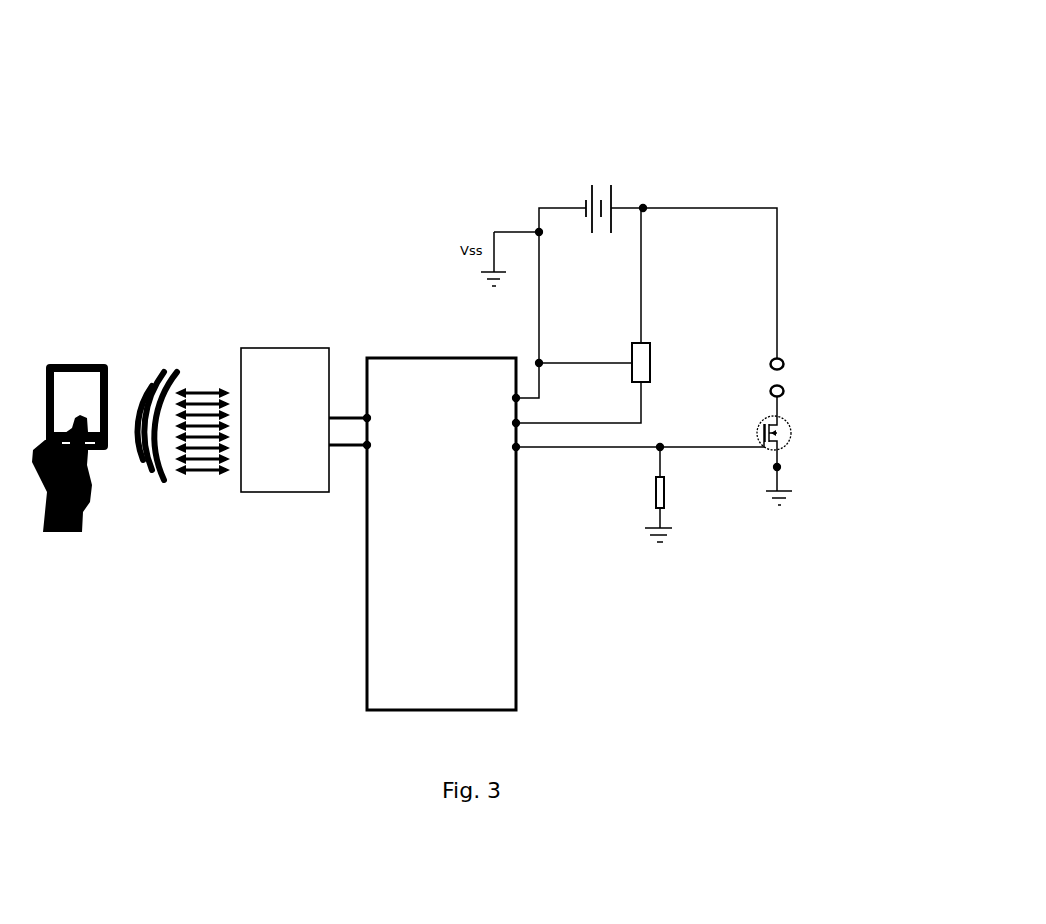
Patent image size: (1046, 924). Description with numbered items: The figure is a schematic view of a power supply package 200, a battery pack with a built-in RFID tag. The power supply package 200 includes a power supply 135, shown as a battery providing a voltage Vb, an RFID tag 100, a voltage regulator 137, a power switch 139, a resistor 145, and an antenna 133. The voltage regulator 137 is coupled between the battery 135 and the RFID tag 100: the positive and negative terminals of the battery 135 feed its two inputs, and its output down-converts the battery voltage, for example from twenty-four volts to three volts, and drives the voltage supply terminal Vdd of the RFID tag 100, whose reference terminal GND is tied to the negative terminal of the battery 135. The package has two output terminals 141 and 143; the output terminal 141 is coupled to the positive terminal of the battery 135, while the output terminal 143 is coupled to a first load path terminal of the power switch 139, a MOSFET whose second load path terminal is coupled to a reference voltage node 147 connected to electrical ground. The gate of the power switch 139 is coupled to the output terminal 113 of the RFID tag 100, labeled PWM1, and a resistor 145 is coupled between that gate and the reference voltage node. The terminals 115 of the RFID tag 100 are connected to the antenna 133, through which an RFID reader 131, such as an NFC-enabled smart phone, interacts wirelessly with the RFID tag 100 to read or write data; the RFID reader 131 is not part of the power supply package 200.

The power supply package 200 is at (396, 110).
The RFID reader 131 is at (70, 360).
The antenna 133 is at (275, 348).
The terminals 115 is at (366, 418).
The RFID tag 100 is at (443, 534).
The output terminal 113 is at (521, 450).
The power supply 135 is at (596, 180).
The voltage regulator 137 is at (652, 348).
The output terminal 141 is at (786, 364).
The output terminal 143 is at (786, 390).
The power switch 139 is at (795, 437).
The reference voltage node 147 is at (785, 468).
The resistor 145 is at (668, 498).